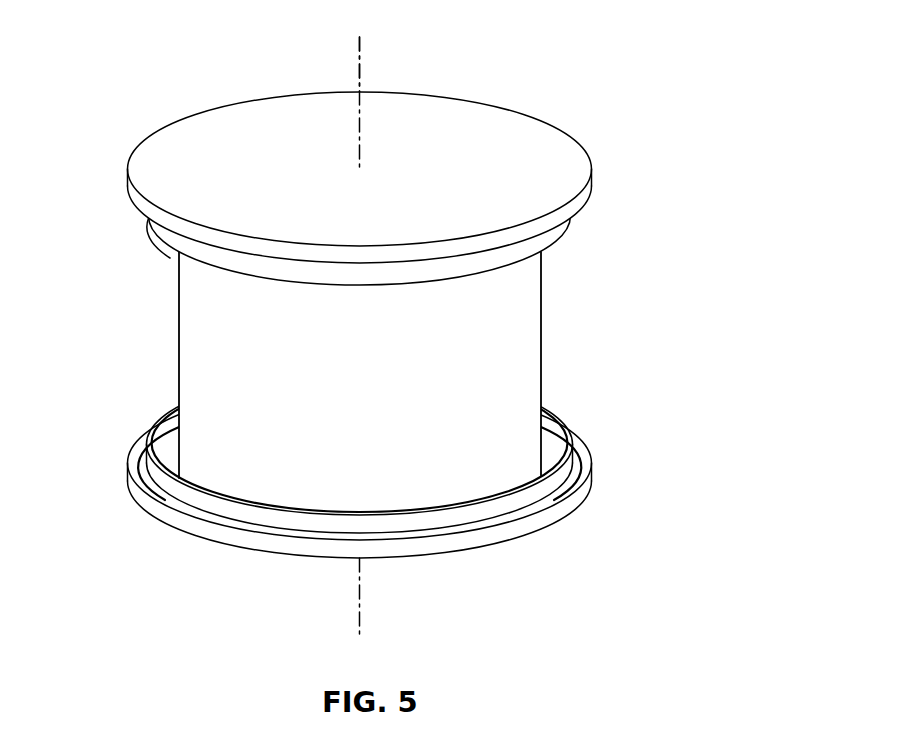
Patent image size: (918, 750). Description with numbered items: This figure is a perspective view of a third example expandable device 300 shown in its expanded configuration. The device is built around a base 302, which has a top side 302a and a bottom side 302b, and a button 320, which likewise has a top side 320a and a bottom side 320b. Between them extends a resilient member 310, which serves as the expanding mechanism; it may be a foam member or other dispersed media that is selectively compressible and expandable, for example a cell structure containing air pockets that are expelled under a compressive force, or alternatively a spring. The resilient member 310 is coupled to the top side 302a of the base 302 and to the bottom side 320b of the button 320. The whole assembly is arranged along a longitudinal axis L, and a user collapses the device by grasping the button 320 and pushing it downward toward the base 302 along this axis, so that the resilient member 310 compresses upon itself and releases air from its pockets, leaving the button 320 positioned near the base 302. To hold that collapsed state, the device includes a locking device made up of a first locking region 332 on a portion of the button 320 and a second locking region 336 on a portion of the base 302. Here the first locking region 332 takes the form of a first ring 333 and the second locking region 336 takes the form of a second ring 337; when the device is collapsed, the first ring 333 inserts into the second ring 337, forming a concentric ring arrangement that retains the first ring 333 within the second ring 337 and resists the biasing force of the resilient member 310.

The expandable device 300 is at (121, 56).
The longitudinal axis L is at (360, 69).
The base 302 is at (416, 485).
The top side of the base 302a is at (573, 481).
The bottom side of the base 302b is at (535, 532).
The resilient member 310 is at (535, 338).
The button 320 is at (422, 166).
The top side of the button 320a is at (500, 131).
The bottom side of the button 320b is at (587, 202).
The first locking region 332 is at (533, 242).
The first ring 333 is at (175, 247).
The second locking region 336 is at (573, 450).
The second ring 337 is at (158, 478).